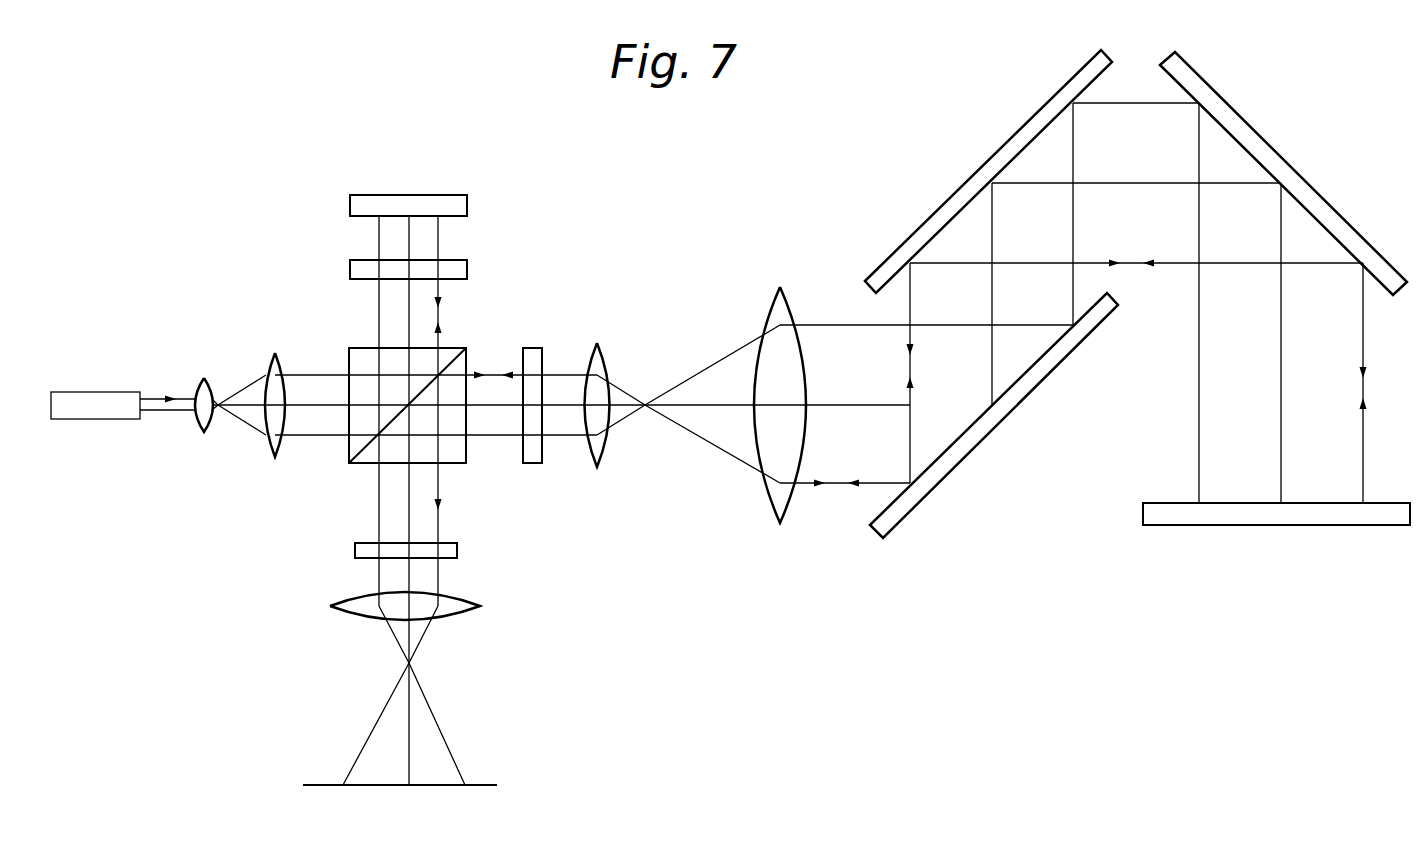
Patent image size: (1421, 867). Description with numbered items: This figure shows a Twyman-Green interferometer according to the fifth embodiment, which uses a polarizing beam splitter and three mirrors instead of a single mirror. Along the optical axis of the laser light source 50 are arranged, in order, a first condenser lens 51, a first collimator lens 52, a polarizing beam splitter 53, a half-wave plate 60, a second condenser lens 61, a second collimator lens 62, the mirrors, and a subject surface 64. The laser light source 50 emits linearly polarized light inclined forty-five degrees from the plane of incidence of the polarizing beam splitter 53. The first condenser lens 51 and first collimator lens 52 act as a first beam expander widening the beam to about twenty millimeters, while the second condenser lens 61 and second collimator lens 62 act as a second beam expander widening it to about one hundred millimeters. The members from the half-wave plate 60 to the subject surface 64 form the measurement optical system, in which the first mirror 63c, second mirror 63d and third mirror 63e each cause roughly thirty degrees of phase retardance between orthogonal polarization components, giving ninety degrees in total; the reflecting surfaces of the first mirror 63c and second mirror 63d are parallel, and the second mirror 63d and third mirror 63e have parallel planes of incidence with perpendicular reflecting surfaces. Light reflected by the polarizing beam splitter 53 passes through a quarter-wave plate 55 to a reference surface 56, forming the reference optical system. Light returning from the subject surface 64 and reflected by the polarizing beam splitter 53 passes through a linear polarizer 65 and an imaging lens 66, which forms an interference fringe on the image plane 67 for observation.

The laser light source 50 is at (97, 420).
The first condenser lens 51 is at (207, 434).
The first collimator lens 52 is at (275, 459).
The polarizing beam splitter 53 is at (360, 453).
The quarter-wave plate 55 is at (466, 270).
The reference surface 56 is at (466, 207).
The half-wave plate 60 is at (535, 463).
The second condenser lens 61 is at (600, 468).
The second collimator lens 62 is at (780, 524).
The first mirror 63c is at (876, 516).
The second mirror 63d is at (886, 290).
The third mirror 63e is at (1158, 70).
The subject surface 64 is at (1160, 503).
The linear polarizer 65 is at (457, 550).
The imaging lens 66 is at (480, 606).
The image plane 67 is at (497, 785).